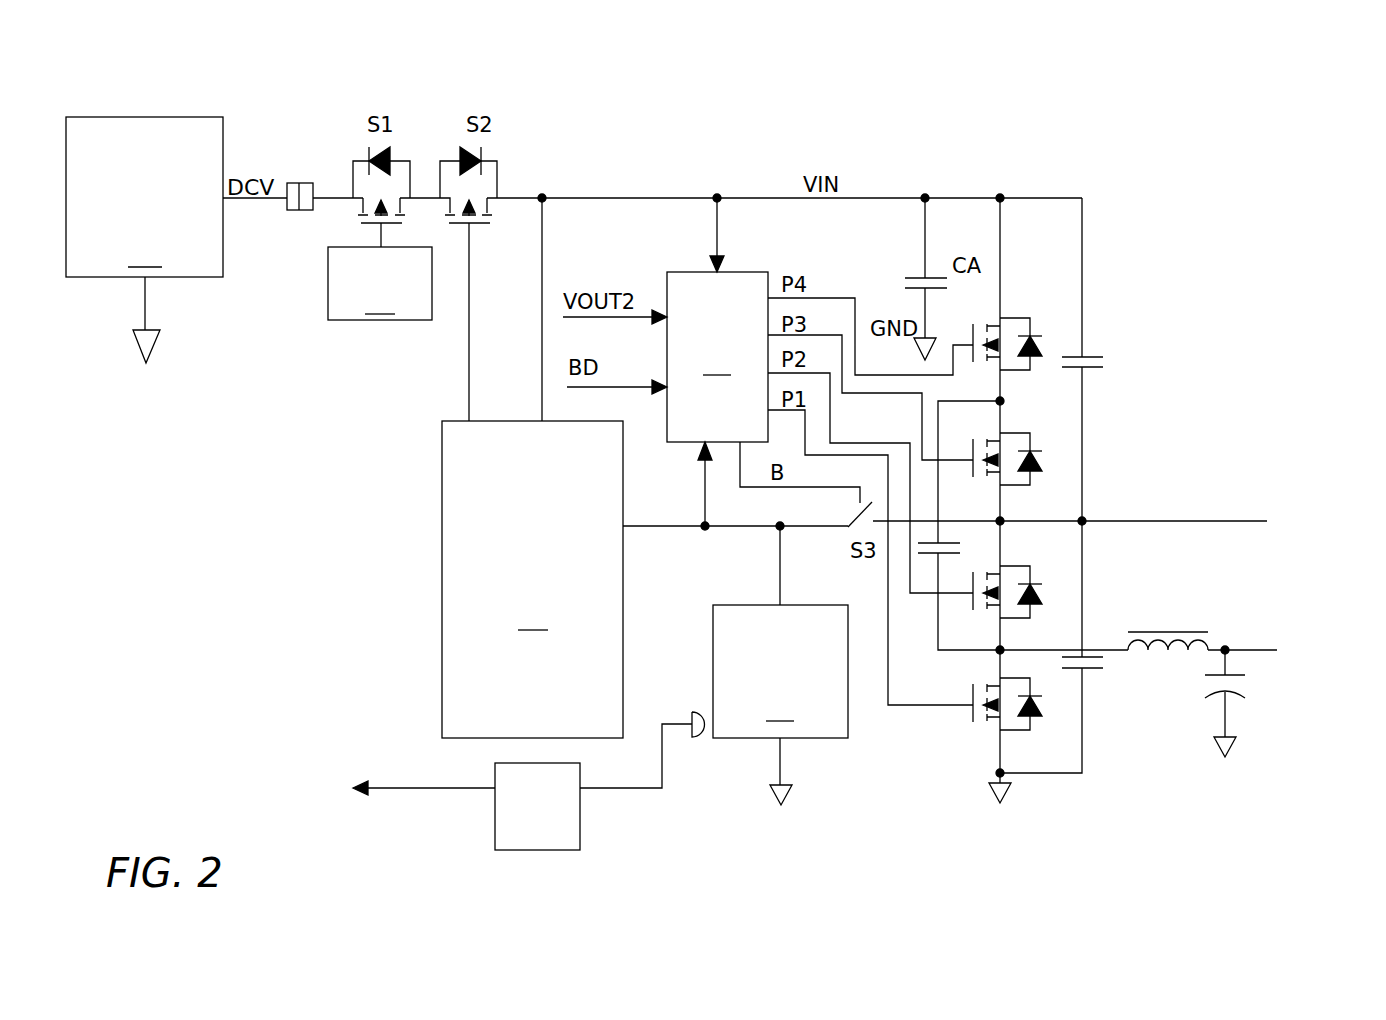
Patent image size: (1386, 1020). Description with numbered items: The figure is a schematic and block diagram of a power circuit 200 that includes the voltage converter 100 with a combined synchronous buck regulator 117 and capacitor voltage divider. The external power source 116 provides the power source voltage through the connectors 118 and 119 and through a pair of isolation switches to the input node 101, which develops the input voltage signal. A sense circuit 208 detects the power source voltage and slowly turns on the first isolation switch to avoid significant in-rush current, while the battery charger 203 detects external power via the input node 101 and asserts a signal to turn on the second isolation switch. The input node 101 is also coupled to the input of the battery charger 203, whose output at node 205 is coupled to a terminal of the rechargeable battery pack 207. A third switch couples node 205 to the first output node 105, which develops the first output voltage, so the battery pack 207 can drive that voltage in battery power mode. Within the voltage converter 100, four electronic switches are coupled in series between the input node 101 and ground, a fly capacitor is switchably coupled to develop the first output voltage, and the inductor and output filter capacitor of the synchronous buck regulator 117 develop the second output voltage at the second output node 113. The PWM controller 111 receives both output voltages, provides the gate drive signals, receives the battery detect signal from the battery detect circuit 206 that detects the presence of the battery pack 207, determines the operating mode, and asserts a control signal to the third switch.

The voltage converter 100 is at (1176, 282).
The input node 101 is at (1000, 197).
The first output node 105 is at (1267, 521).
The PWM controller 111 is at (717, 357).
The second output node 113 is at (1268, 650).
The external power source 116 is at (144, 240).
The synchronous buck regulator 117 is at (1189, 578).
The connector 118 is at (288, 183).
The connector 119 is at (306, 183).
The power circuit 200 is at (702, 92).
The battery charger 203 is at (532, 564).
The node 205 is at (780, 528).
The battery detect circuit 206 is at (495, 812).
The rechargeable battery pack 207 is at (784, 707).
The sense circuit 208 is at (380, 271).